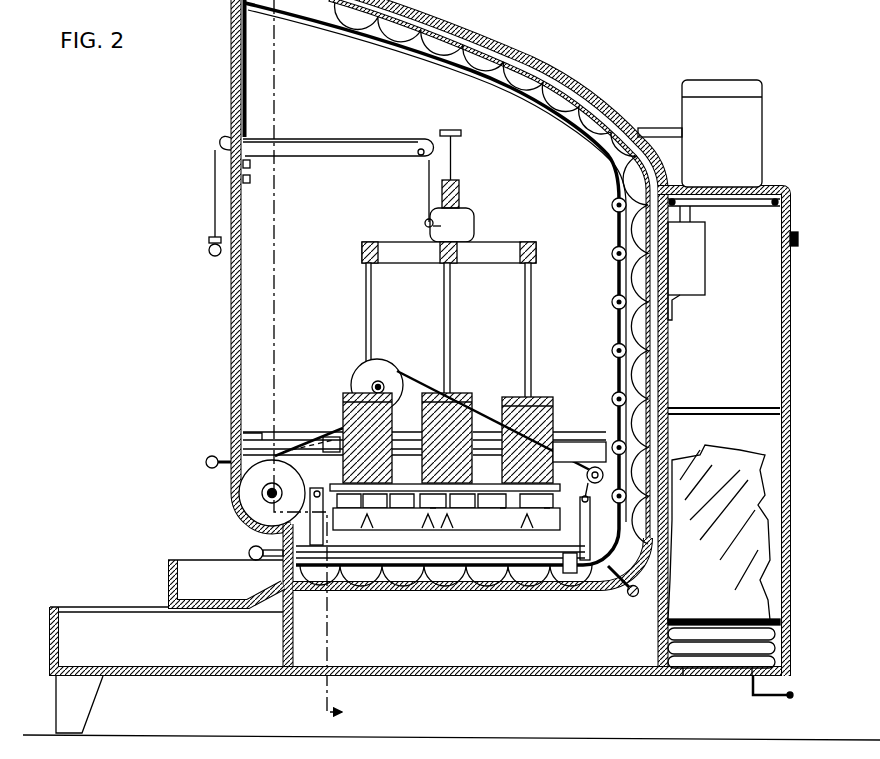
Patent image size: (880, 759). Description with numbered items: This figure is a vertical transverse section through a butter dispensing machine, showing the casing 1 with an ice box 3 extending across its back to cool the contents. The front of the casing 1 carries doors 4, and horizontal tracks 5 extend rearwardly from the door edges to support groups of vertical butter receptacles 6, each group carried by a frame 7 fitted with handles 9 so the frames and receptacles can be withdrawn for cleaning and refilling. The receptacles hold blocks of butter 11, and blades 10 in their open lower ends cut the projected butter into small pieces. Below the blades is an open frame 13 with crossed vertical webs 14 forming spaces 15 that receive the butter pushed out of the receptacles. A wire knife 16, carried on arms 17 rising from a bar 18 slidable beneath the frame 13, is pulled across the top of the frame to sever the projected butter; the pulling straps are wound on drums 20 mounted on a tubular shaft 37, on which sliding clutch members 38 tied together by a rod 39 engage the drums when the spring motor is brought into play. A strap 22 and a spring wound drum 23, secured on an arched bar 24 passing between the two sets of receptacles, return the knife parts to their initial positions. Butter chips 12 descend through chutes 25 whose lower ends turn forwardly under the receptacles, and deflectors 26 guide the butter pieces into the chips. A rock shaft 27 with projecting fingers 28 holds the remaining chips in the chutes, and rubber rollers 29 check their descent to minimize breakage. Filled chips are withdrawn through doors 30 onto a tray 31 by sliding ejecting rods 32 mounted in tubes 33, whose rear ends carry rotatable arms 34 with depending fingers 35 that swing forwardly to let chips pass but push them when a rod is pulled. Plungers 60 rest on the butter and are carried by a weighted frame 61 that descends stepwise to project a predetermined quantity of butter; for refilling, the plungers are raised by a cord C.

The casing 1 is at (492, 35).
The ice box 3 is at (740, 353).
The doors 4 is at (231, 405).
The horizontal tracks 5 is at (243, 433).
The butter receptacles 6 is at (343, 413).
The frame 7 is at (402, 430).
The handles 9 is at (323, 454).
The blades 10 is at (488, 505).
The blocks of butter 11 is at (341, 397).
The butter chips 12 is at (591, 151).
The open frame 13 is at (503, 500).
The crossed vertical webs 14 is at (370, 494).
The spaces 15 is at (433, 497).
The wire knife 16 is at (549, 451).
The arms 17 is at (547, 513).
The bar 18 is at (567, 510).
The drums 20 is at (258, 518).
The strap 22 is at (478, 420).
The spring wound drum 23 is at (381, 373).
The arched bar 24 is at (320, 440).
The chutes 25 is at (613, 223).
The deflectors 26 is at (345, 512).
The rock shaft 27 is at (633, 597).
The fingers 28 is at (612, 590).
The rubber rollers 29 is at (613, 293).
The doors 30 is at (451, 673).
The tray 31 is at (200, 597).
The ejecting rods 32 is at (263, 563).
The tubes 33 is at (490, 587).
The rotatable arms 34 is at (544, 586).
The depending fingers 35 is at (563, 588).
The tubular shaft 37 is at (265, 492).
The sliding clutch members 38 is at (264, 500).
The rod 39 is at (262, 485).
The plungers 60 is at (365, 292).
The weighted frame 61 is at (362, 250).
The cord C is at (311, 138).